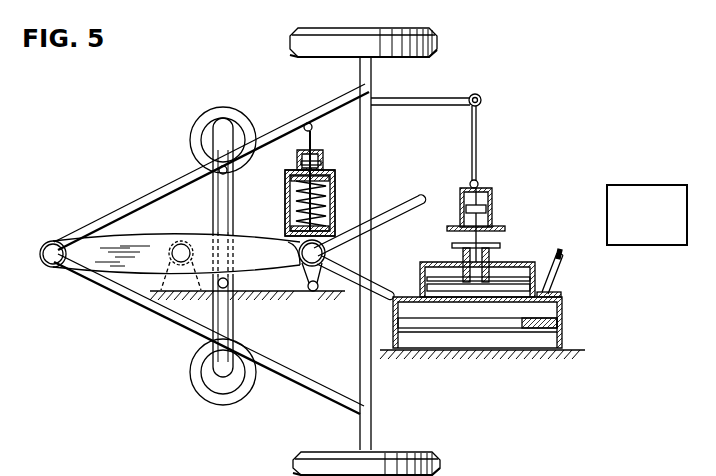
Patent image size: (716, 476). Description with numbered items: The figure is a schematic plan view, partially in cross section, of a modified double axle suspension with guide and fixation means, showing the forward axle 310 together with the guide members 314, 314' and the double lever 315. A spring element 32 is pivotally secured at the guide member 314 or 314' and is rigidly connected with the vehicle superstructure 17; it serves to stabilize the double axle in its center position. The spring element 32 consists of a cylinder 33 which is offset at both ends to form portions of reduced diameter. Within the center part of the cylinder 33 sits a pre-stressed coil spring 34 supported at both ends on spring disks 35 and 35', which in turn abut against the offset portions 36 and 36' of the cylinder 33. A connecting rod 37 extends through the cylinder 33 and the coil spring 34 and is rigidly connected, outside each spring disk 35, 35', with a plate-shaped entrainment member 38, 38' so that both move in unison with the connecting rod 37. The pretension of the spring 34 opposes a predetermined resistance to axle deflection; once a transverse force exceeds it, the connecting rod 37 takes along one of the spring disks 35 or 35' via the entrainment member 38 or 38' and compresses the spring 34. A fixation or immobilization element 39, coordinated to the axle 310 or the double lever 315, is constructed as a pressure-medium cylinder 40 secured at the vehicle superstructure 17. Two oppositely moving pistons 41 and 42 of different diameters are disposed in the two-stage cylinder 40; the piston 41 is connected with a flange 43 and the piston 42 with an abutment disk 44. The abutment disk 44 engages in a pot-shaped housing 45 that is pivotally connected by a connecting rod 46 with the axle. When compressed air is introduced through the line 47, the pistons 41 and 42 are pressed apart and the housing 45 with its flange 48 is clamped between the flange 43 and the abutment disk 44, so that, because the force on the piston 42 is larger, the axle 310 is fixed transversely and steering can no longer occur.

The vehicle superstructure 17 is at (180, 297).
The spring element 32 is at (346, 193).
The cylinder 33 is at (286, 197).
The coil spring 34 is at (335, 210).
The spring disk 35 is at (327, 174).
The spring disk 35' is at (289, 225).
The offset portion 36 is at (297, 161).
The offset portion 36' is at (284, 254).
The connecting rod 37 is at (312, 127).
The entrainment member 38 is at (328, 150).
The entrainment member 38' is at (331, 265).
The fixation or immobilization element 39 is at (606, 217).
The pressure-medium cylinder 40 is at (563, 306).
The piston 41 is at (421, 266).
The piston 42 is at (425, 322).
The flange 43 is at (500, 246).
The abutment disk 44 is at (463, 208).
The pot-shaped housing 45 is at (493, 200).
The connecting rod 46 is at (478, 147).
The line 47 is at (560, 272).
The flange 48 is at (506, 228).
The forward axle 310 is at (360, 426).
The guide member 314 is at (209, 334).
The guide member 314' is at (211, 167).
The double lever 315 is at (85, 262).